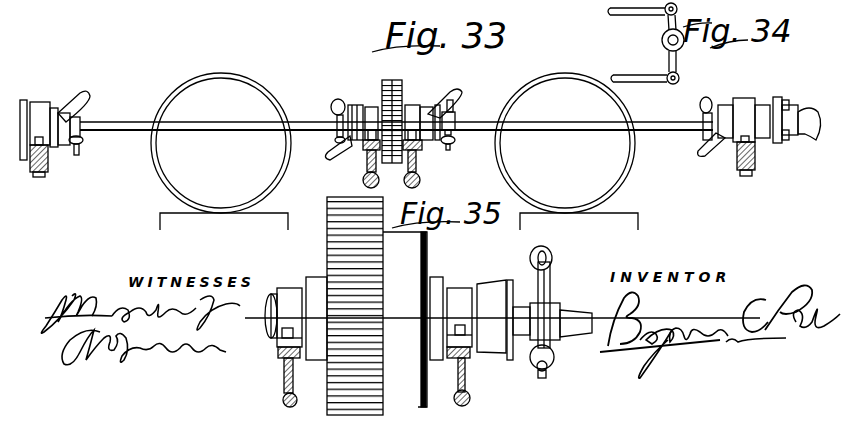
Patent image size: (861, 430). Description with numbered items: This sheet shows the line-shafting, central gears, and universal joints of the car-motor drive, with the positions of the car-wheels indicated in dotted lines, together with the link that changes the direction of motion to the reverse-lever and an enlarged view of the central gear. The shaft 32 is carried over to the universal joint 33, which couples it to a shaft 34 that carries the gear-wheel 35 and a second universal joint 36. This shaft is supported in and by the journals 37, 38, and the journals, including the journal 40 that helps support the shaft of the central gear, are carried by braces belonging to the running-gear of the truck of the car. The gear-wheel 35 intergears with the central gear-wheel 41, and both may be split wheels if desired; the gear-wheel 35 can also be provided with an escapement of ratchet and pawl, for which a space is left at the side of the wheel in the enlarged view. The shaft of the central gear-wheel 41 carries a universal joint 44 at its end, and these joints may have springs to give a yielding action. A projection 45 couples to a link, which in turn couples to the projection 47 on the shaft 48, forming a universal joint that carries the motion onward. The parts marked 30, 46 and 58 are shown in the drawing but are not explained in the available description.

In FIG. 33, the clamp bracket B 30 is at (33, 92).
In FIG. 33, the shaft 32 is at (115, 124).
In FIG. 33, the universal joint 33 is at (350, 105).
In FIG. 33, the shaft 34 is at (372, 106).
In FIG. 33, the gear-wheel 35 is at (398, 80).
In FIG. 33, the second universal joint 36 is at (446, 96).
In FIG. 35, the journal 37 is at (291, 303).
In FIG. 35, the journal 38 is at (460, 296).
In FIG. 33, the journal 40 is at (418, 105).
In FIG. 35, the central gear-wheel 41 is at (343, 257).
In FIG. 35, the universal joint 44 is at (495, 320).
In FIG. 35, the projection 45 is at (507, 283).
In FIG. 35, the hub 46 is at (548, 298).
In FIG. 35, the projection 47 is at (530, 337).
In FIG. 35, the shaft 48 is at (570, 326).
In FIG. 33, the end bearing assembly 58 is at (648, 126).